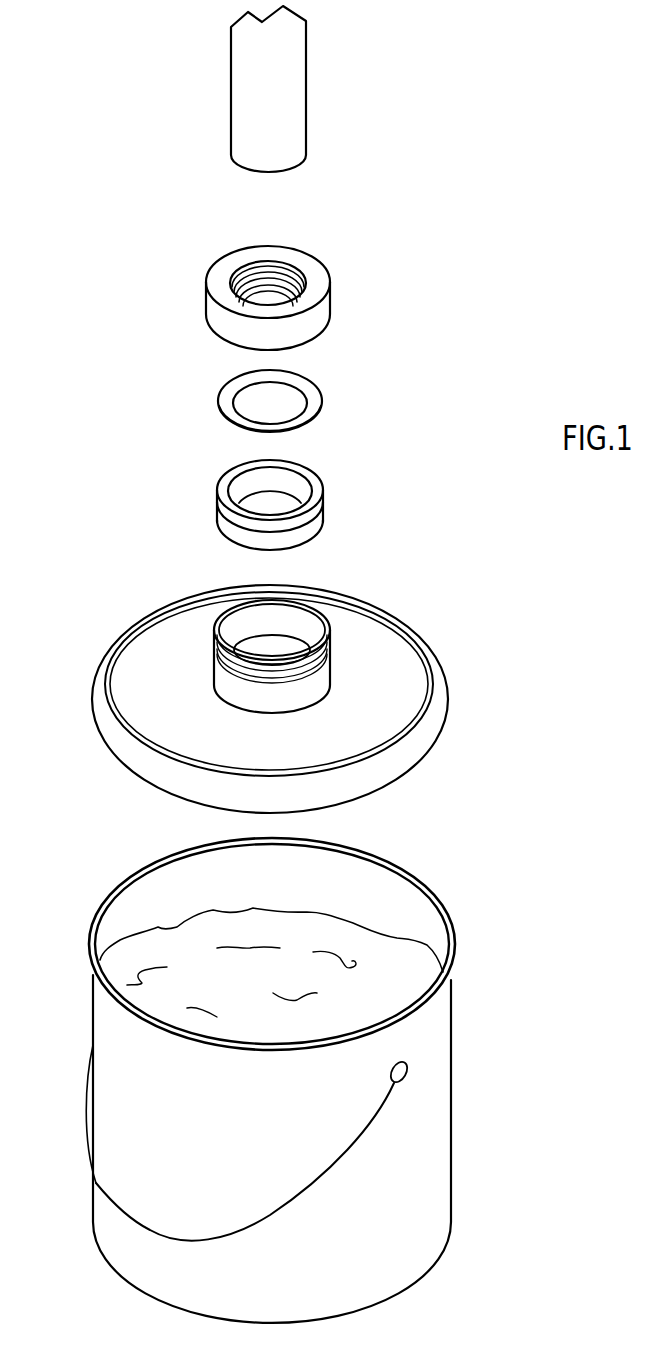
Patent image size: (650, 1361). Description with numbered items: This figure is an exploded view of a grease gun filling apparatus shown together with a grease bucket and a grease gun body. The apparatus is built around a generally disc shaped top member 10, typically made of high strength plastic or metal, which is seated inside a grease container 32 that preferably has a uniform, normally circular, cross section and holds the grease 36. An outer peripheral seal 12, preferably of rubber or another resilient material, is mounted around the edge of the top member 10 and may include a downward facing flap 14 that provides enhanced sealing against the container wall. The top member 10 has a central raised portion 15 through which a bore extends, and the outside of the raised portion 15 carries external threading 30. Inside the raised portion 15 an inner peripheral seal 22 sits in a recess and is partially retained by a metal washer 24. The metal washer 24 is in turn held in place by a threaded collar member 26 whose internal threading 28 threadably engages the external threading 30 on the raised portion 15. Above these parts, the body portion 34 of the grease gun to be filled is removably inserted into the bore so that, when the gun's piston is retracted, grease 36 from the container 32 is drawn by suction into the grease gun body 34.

The top member 10 is at (282, 683).
The outer peripheral seal 12 is at (428, 678).
The downward facing flap 14 is at (437, 715).
The central raised portion 15 is at (228, 685).
The inner peripheral seal 22 is at (313, 520).
The metal washer 24 is at (315, 404).
The threaded collar member 26 is at (284, 289).
The internal threading 28 is at (242, 268).
The external threading 30 is at (182, 633).
The grease container 32 is at (301, 1076).
The body portion of grease gun 34 is at (297, 120).
The grease 36 is at (383, 957).